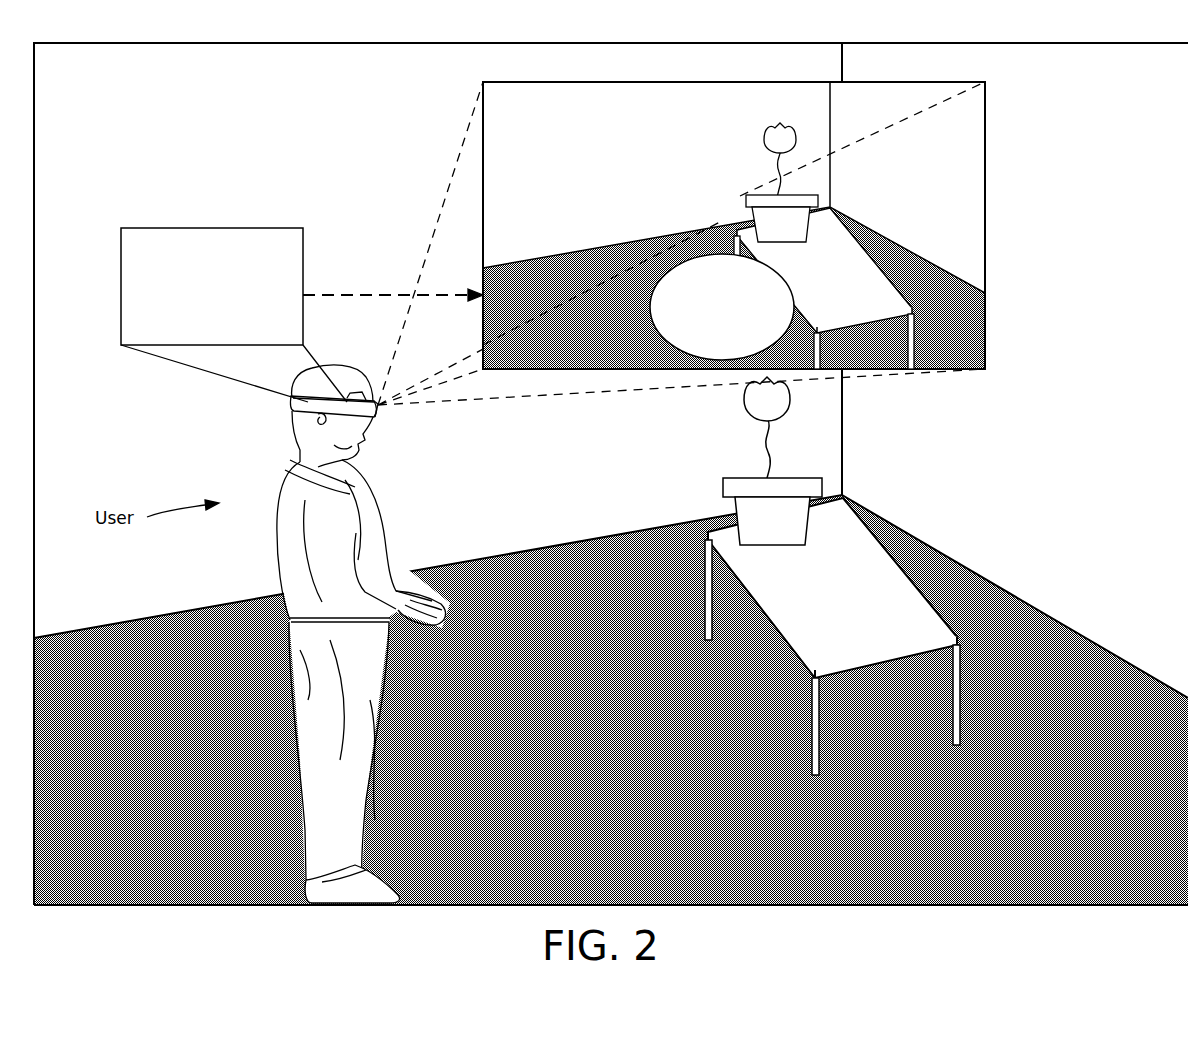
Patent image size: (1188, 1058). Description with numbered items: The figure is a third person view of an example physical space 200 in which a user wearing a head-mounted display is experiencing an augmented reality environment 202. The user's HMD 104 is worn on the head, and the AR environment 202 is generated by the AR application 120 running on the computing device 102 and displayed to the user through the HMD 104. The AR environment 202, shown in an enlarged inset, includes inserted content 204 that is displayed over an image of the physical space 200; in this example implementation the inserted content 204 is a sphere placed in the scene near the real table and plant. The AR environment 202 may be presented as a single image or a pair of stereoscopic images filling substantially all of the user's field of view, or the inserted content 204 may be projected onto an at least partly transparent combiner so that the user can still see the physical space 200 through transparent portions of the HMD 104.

The physical space 200 is at (611, 474).
The AR application 120 is at (302, 315).
The computing device 102 is at (382, 418).
The HMD 104 is at (380, 412).
The AR environment 202 is at (761, 216).
The inserted content 204 is at (681, 255).